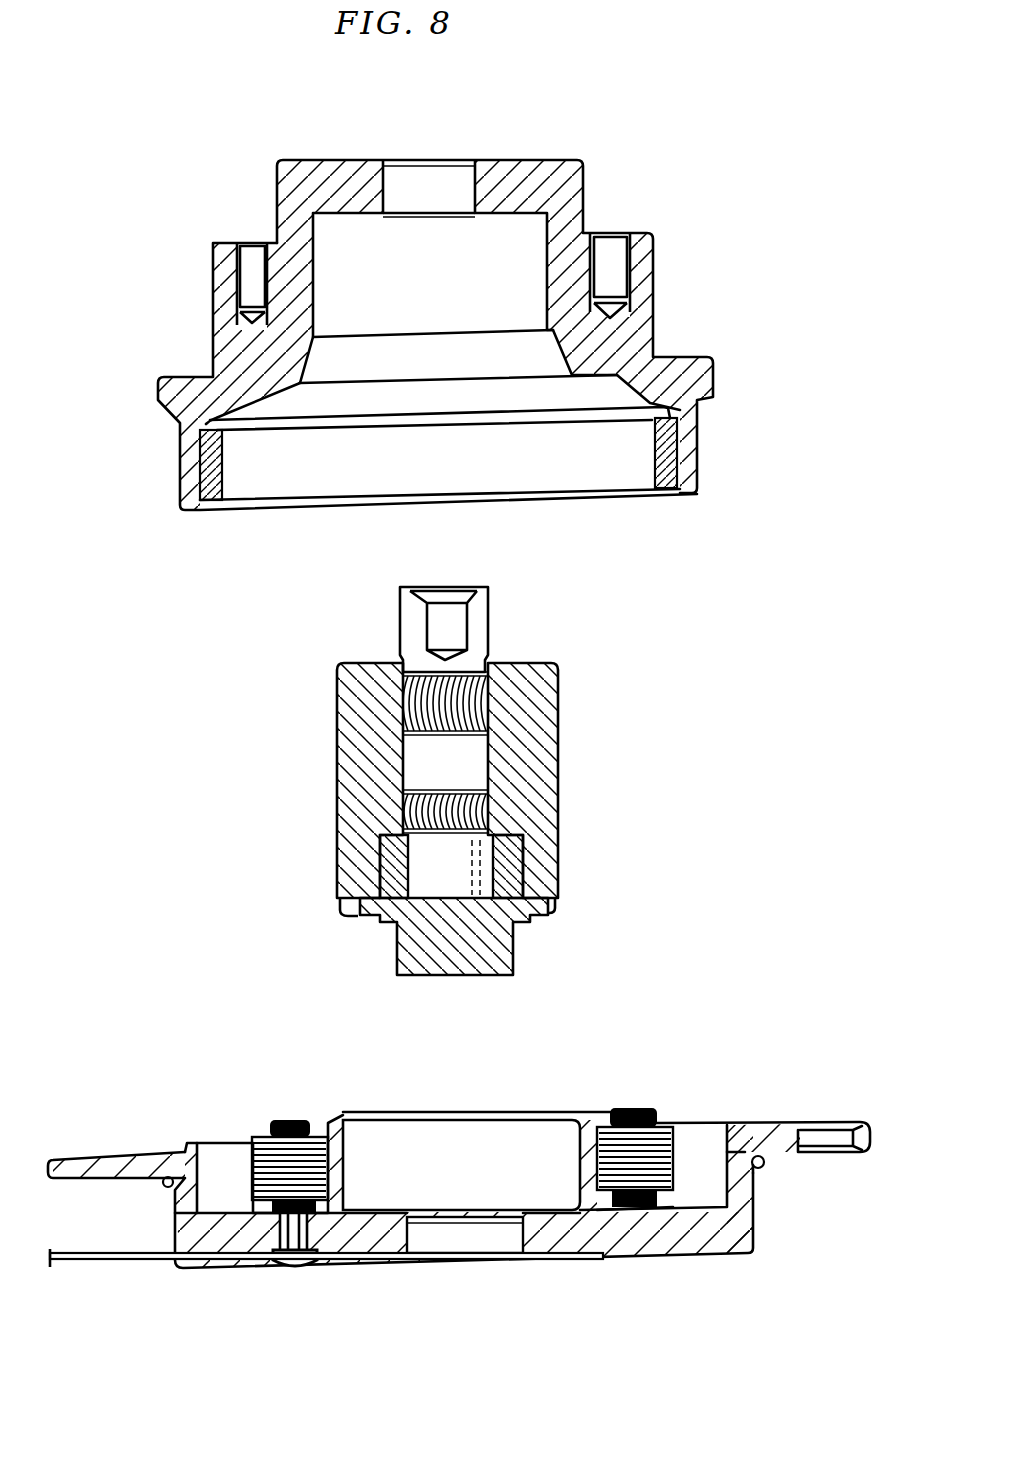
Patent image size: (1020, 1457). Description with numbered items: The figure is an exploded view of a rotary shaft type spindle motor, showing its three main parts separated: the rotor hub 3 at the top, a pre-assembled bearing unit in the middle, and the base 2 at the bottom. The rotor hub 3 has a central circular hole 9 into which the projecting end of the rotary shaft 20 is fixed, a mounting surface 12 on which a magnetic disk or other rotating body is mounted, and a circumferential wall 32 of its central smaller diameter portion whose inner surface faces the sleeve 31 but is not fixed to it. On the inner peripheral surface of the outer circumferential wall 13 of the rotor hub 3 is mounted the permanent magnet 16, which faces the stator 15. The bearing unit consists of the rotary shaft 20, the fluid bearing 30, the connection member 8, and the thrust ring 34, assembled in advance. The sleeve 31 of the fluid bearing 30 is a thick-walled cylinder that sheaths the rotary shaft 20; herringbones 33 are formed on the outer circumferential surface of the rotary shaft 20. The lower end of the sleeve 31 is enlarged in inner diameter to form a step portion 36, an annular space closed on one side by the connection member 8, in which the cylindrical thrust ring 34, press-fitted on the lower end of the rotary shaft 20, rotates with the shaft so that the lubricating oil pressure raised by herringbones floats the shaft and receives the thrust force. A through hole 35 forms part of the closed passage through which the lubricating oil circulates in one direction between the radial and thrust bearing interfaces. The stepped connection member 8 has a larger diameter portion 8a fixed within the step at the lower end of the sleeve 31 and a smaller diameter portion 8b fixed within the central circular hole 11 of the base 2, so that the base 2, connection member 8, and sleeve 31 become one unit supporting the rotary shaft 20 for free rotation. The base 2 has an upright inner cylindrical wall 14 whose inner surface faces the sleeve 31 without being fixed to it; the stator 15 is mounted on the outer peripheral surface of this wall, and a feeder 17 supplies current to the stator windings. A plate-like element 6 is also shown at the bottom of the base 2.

The base 2 is at (459, 1214).
The rotor hub 3 is at (409, 309).
The plate 6 is at (420, 1232).
The connection member 8 is at (459, 974).
The larger diameter portion 8a is at (535, 903).
The smaller diameter portion 8b is at (494, 958).
The central circular hole 9 is at (390, 186).
The central circular hole 11 is at (444, 1255).
The mounting surface 12 is at (612, 232).
The outer circumferential wall 13 is at (190, 470).
The inner cylindrical wall 14 is at (348, 1166).
The stator 15 is at (262, 1138).
The permanent magnet 16 is at (222, 468).
The feeder 17 is at (290, 1270).
The rotary shaft 20 is at (497, 611).
The fluid bearing 30 is at (451, 817).
The sleeve 31 is at (343, 760).
The circumferential wall 32 is at (305, 273).
The herringbones 33 is at (428, 738).
The thrust ring 34 is at (395, 858).
The through hole 35 is at (472, 858).
The step portion 36 is at (520, 860).